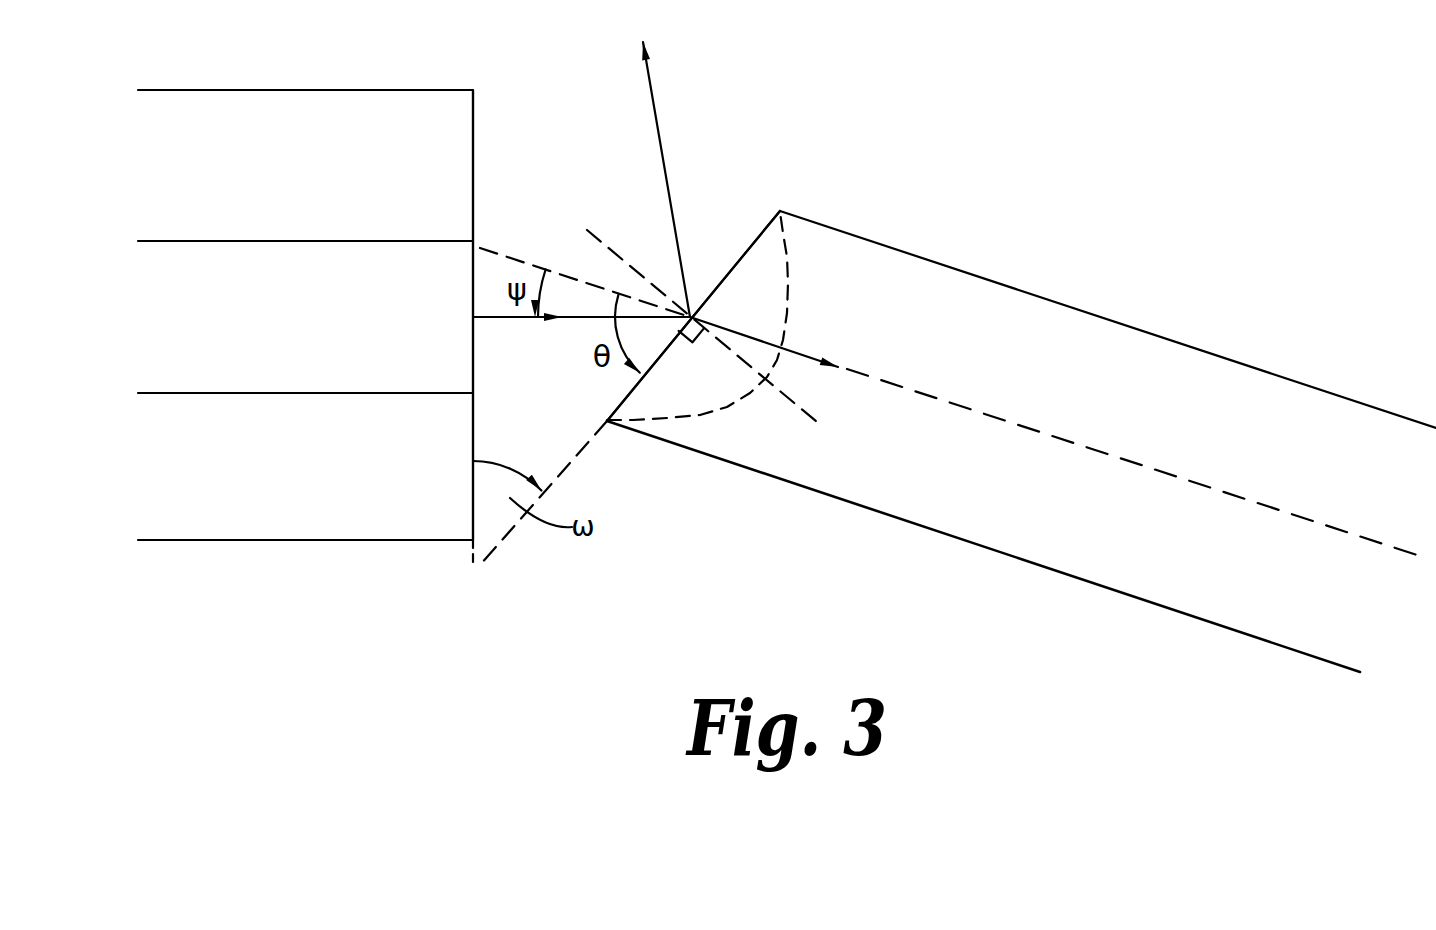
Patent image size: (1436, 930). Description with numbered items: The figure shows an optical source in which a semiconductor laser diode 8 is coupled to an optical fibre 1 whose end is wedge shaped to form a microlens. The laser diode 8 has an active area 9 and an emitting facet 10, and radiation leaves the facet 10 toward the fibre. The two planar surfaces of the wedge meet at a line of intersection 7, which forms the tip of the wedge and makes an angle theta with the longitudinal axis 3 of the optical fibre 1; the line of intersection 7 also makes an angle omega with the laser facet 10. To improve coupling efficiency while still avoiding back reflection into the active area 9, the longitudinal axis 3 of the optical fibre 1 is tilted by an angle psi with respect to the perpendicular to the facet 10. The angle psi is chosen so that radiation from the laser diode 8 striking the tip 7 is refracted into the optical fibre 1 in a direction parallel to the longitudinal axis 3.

The optical fibre 1 is at (1173, 353).
The longitudinal axis 3 is at (1178, 470).
The line of intersection 7 is at (755, 232).
The semiconductor laser diode 8 is at (393, 105).
The active area 9 is at (360, 385).
The facet 10 is at (476, 508).